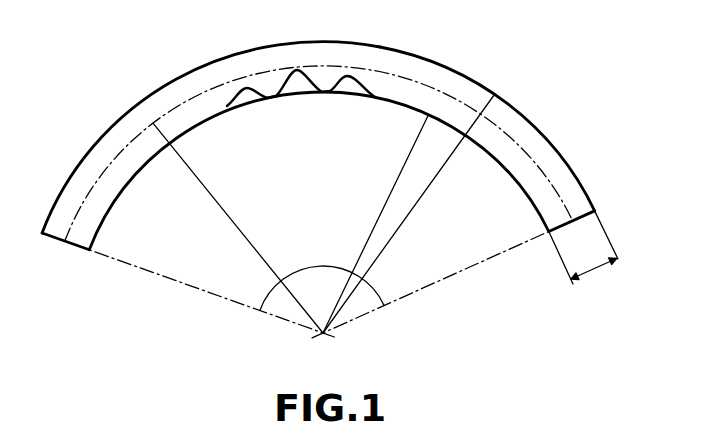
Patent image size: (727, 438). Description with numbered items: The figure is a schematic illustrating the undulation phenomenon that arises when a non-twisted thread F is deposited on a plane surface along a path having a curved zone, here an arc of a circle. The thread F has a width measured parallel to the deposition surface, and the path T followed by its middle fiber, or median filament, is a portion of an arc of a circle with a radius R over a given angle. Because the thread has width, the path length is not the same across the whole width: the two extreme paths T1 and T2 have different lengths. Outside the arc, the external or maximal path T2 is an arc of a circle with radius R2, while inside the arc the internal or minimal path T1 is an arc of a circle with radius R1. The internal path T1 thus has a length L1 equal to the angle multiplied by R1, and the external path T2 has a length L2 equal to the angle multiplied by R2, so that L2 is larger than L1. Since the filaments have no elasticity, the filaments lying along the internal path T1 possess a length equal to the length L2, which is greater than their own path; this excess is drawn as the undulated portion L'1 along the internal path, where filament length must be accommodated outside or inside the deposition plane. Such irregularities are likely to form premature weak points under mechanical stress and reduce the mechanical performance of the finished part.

The path T is at (449, 97).
The internal path T1 is at (110, 226).
The external path T2 is at (144, 89).
The length of the internal path L1 is at (140, 172).
The length of the external path L2 is at (101, 133).
The corrugated inner surface portion L'1 is at (301, 110).
The thread F is at (552, 148).
The radius R is at (238, 228).
The radius of the internal path R1 is at (376, 224).
The radius of the external path R2 is at (409, 213).